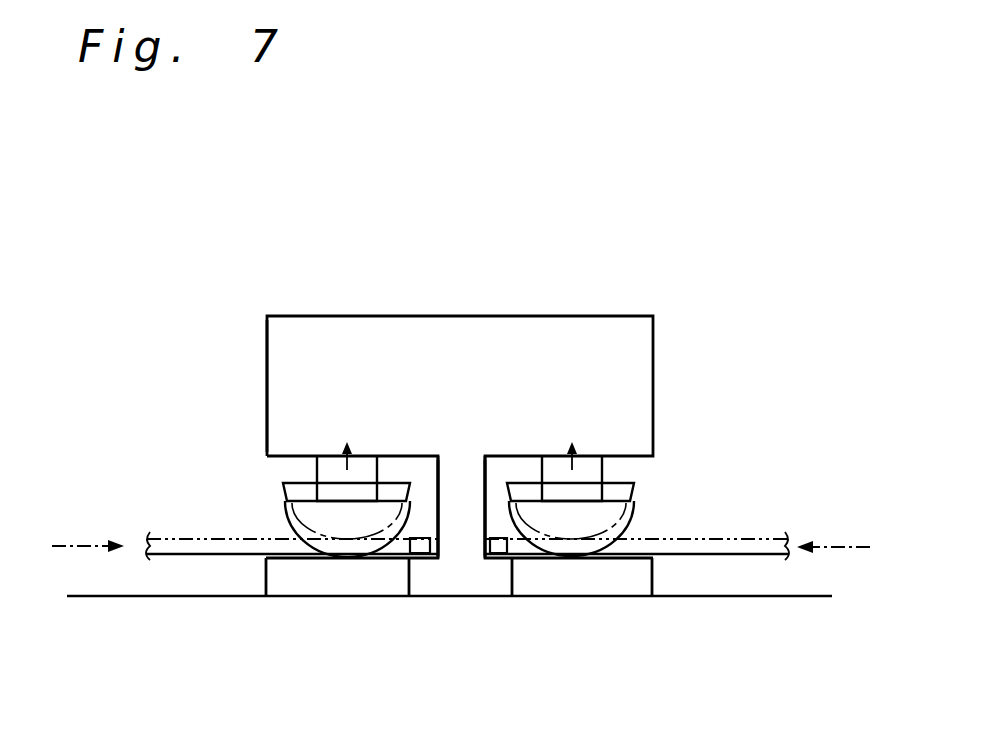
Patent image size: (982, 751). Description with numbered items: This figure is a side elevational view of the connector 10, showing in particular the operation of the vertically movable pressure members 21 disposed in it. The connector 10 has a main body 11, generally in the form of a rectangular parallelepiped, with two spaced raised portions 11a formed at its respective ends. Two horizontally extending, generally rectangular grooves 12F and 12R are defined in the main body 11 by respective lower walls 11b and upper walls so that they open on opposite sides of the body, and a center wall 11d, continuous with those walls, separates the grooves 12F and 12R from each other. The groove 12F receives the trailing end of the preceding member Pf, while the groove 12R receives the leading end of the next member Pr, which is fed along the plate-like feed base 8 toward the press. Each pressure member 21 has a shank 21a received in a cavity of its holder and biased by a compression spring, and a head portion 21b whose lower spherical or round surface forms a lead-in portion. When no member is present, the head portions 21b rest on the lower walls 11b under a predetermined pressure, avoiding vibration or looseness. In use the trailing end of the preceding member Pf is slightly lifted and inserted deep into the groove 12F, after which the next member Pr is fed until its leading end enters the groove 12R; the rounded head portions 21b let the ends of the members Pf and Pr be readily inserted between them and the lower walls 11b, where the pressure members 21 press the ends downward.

The feed base 8 is at (184, 596).
The connector 10 is at (497, 286).
The main body 11 is at (325, 308).
The raised portions 11a is at (267, 368).
The lower walls 11b is at (266, 581).
The center wall 11d is at (460, 540).
The rectangular groove 12R is at (436, 508).
The rectangular groove 12F is at (485, 516).
The pressure members 21 is at (459, 496).
The shank 21a is at (317, 468).
The head portion 21b is at (293, 521).
The next member Pr is at (185, 539).
The preceding member Pf is at (748, 539).